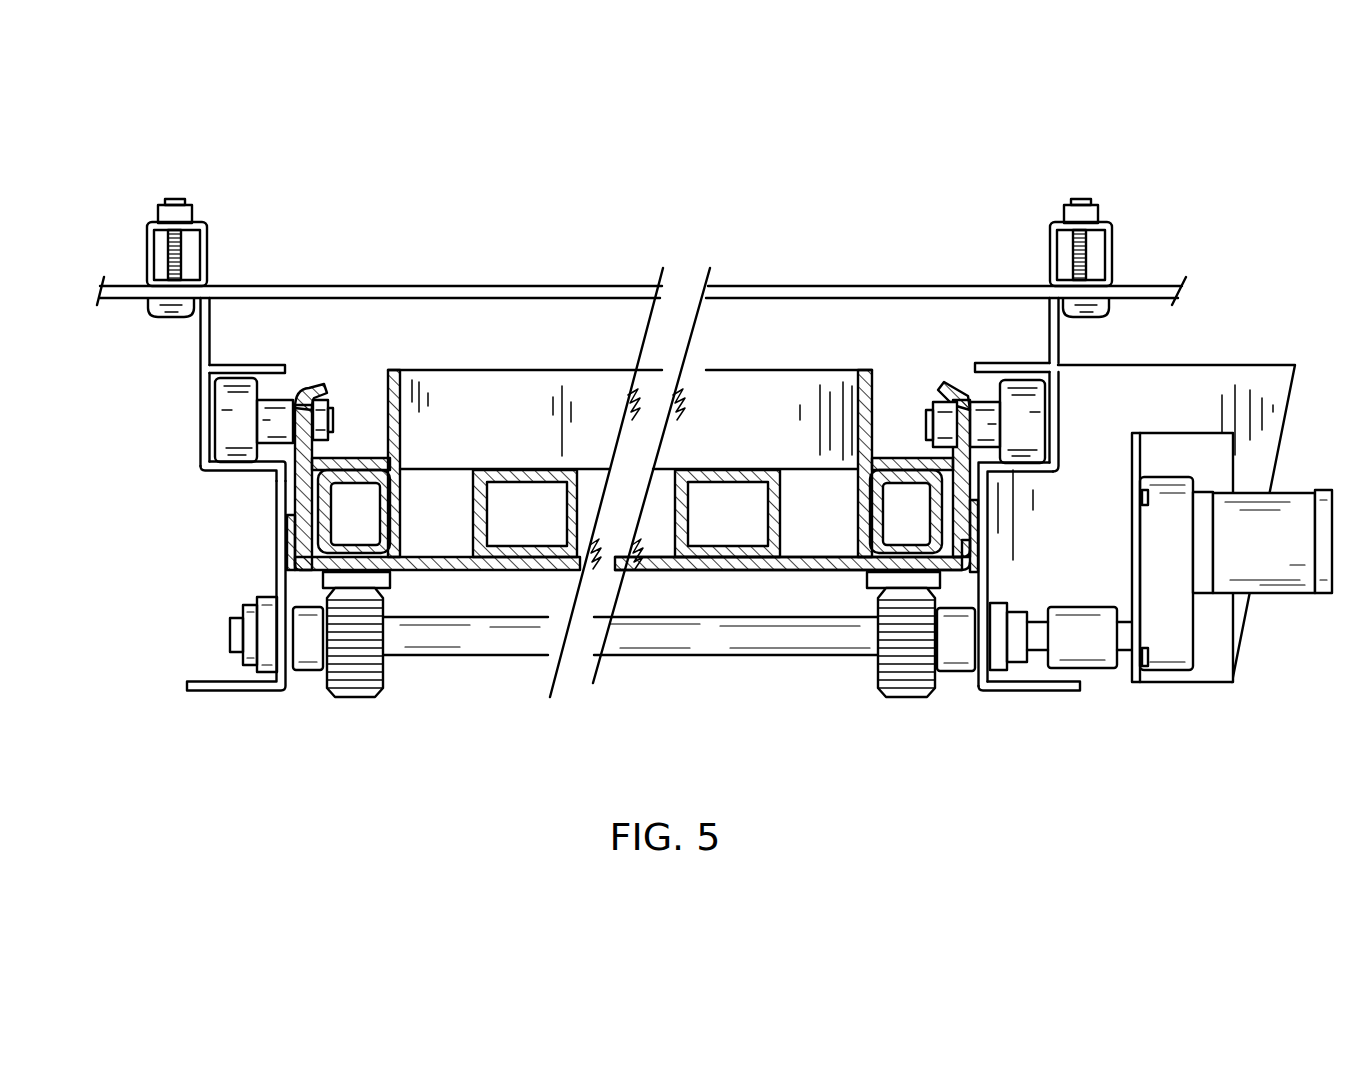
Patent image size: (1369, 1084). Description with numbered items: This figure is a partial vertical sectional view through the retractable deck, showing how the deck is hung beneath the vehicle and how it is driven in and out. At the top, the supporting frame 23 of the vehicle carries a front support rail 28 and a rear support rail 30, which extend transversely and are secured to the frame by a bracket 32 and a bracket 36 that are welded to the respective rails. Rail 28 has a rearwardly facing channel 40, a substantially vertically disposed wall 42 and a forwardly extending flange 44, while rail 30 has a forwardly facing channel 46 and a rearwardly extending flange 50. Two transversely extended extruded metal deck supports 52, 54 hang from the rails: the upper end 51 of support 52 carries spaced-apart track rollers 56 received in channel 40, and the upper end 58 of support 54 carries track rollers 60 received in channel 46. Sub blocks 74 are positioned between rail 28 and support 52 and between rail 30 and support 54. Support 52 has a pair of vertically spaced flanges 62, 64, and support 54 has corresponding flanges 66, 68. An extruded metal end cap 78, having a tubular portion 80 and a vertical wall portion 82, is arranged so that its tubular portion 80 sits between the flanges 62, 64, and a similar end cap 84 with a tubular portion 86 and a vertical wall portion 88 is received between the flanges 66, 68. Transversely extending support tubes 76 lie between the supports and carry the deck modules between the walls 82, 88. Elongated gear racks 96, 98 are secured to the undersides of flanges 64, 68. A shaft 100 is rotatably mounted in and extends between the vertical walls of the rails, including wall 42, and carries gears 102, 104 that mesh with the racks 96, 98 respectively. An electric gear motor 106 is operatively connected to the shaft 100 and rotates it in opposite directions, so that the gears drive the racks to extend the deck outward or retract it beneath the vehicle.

The supporting frame 23 is at (210, 248).
The front support rail 28 is at (1078, 385).
The rear support rail 30 is at (176, 468).
The bracket 32 is at (1062, 342).
The bracket 36 is at (210, 338).
The rearwardly facing channel 40 is at (972, 385).
The vertically disposed wall 42 is at (990, 522).
The forwardly extending flange 44 is at (1065, 692).
The forwardly facing channel 46 is at (290, 383).
The rearwardly extending flange 50 is at (222, 692).
The upper end 51 is at (955, 402).
The deck support 52 is at (924, 377).
The deck support 54 is at (348, 372).
The track rollers 56 is at (1042, 436).
The upper end 58 is at (321, 382).
The track rollers 60 is at (222, 420).
The flange 62 is at (905, 458).
The flange 64 is at (858, 568).
The flange 66 is at (356, 458).
The flange 68 is at (378, 525).
The sub blocks 74 is at (290, 545).
The support tubes 76 is at (532, 470).
The end cap 78 is at (846, 497).
The tubular portion 80 is at (885, 522).
The vertical wall portion 82 is at (858, 425).
The end cap 84 is at (404, 493).
The tubular portion 86 is at (388, 578).
The vertical wall portion 88 is at (401, 437).
The gear rack 96 is at (876, 582).
The gear rack 98 is at (322, 608).
The shaft 100 is at (742, 640).
The gear 102 is at (902, 700).
The gear 104 is at (368, 692).
The electric gear motor 106 is at (1304, 480).